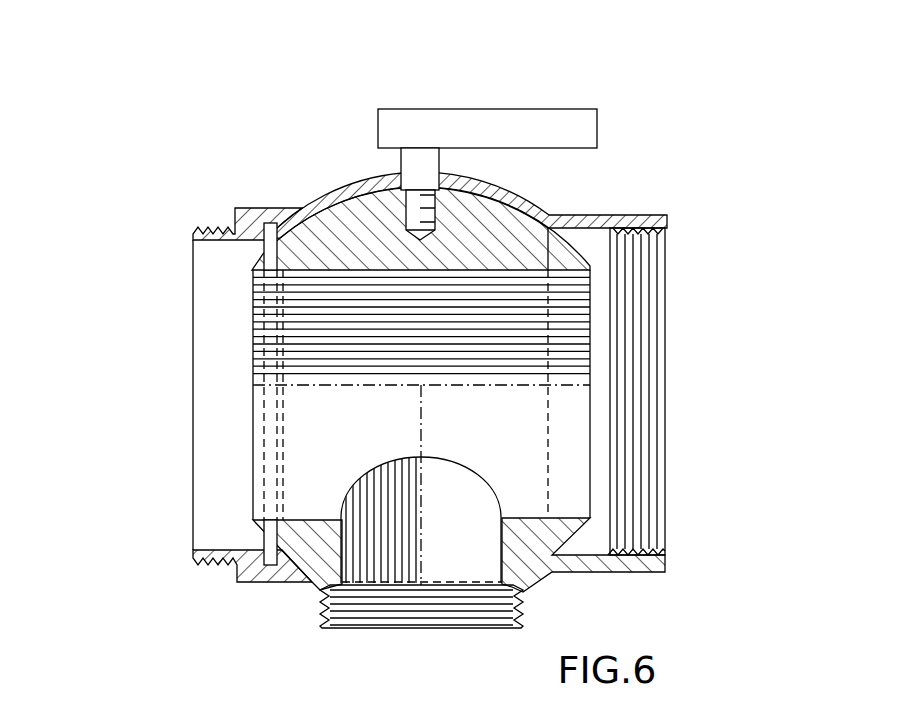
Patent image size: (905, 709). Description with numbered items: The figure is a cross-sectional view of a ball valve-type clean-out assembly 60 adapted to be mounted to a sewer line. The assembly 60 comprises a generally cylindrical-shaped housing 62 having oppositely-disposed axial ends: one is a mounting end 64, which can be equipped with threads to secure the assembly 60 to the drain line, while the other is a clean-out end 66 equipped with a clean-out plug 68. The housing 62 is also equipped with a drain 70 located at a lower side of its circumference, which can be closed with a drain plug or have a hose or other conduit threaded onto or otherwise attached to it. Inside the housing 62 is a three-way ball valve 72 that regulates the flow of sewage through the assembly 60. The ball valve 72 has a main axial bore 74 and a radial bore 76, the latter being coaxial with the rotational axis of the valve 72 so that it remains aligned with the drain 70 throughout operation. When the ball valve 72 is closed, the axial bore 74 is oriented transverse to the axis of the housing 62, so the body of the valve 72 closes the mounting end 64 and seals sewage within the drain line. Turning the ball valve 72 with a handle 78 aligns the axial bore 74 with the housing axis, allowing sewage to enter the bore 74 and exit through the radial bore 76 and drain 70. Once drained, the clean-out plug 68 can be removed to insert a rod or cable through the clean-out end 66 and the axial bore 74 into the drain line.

The ball valve-type clean-out assembly 60 is at (722, 345).
The housing 62 is at (523, 200).
The mounting end 64 is at (203, 560).
The clean-out end 66 is at (600, 572).
The clean-out plug 68 is at (645, 476).
The drain 70 is at (320, 617).
The three-way ball valve 72 is at (367, 217).
The main axial bore 74 is at (308, 270).
The radial bore 76 is at (500, 540).
The handle 78 is at (587, 118).